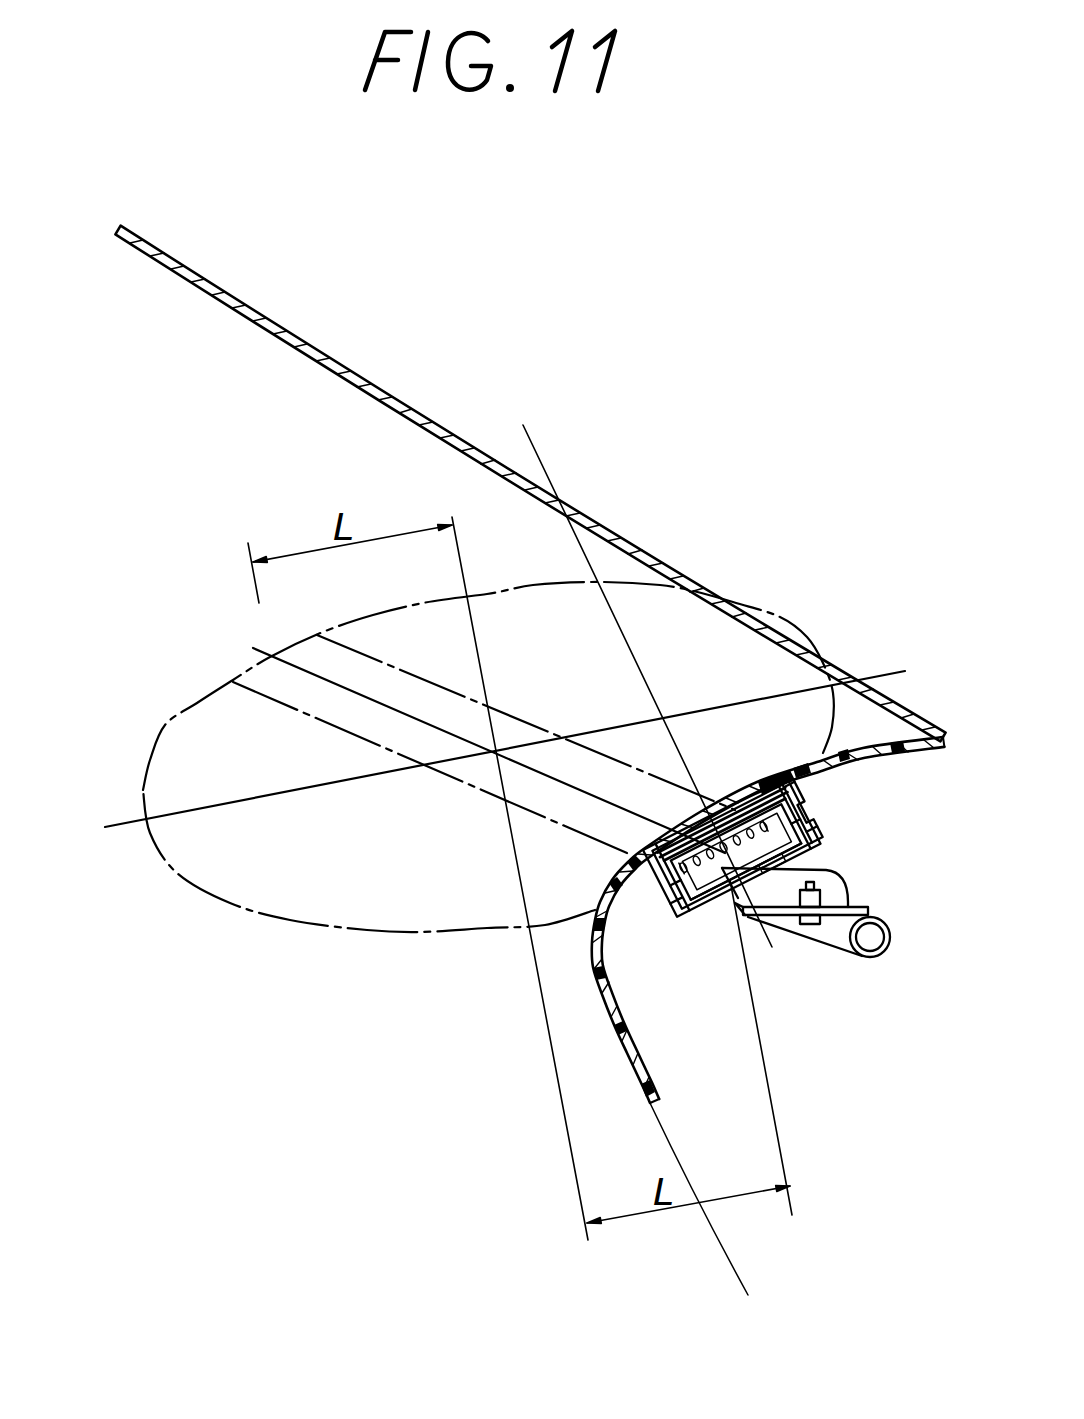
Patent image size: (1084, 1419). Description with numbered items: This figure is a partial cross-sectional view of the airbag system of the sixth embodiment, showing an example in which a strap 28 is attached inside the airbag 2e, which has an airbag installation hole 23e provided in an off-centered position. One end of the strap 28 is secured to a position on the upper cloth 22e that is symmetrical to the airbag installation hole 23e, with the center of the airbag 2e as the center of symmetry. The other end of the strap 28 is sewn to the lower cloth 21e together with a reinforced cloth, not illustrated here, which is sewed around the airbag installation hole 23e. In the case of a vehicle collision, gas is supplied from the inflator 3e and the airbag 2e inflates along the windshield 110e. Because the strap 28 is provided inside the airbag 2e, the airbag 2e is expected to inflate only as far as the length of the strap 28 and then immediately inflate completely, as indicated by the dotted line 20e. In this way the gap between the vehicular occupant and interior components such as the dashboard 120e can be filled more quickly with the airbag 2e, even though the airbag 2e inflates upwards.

The airbag 2e is at (744, 822).
The inflator 3e is at (767, 805).
The dotted line 20e is at (272, 656).
The lower cloth 21e is at (368, 932).
The upper cloth 22e is at (150, 758).
The airbag installation hole 23e is at (795, 803).
The strap 28 is at (470, 768).
The windshield 110e is at (388, 394).
The dashboard 120e is at (625, 1068).